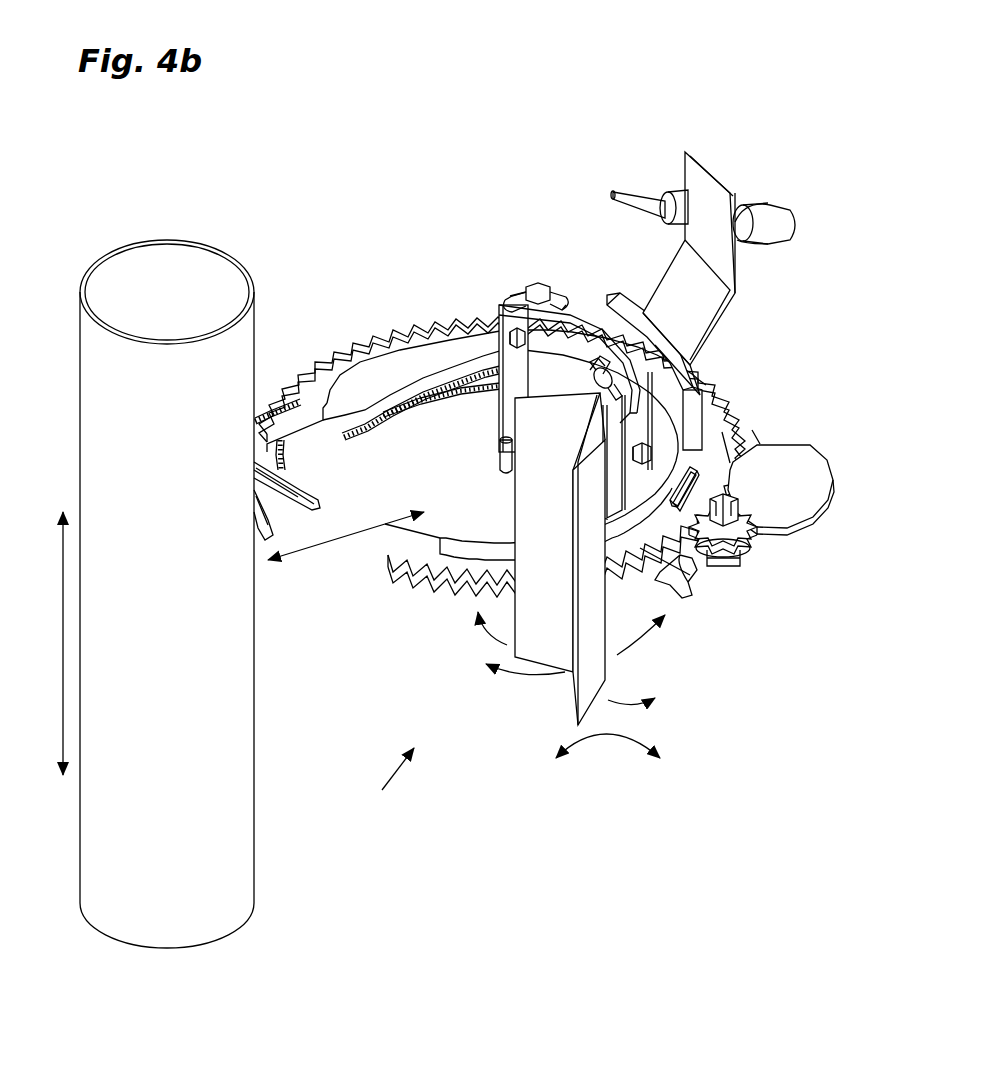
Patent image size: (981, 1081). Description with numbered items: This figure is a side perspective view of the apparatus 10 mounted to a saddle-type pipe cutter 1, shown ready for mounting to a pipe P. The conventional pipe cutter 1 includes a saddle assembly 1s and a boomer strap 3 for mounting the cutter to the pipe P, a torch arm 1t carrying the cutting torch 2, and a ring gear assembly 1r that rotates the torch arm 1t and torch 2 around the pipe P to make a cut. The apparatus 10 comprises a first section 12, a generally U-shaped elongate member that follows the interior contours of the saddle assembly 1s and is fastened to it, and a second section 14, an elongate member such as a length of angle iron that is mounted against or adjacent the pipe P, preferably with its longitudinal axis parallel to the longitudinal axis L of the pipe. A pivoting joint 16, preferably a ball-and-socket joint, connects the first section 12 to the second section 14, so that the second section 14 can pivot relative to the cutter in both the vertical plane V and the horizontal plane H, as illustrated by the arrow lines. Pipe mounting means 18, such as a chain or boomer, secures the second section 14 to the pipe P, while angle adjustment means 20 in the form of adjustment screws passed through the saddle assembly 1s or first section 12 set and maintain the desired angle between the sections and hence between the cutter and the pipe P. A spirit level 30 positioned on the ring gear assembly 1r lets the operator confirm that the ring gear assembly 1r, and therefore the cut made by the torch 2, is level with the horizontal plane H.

The saddle-type pipe cutter 1 is at (509, 243).
The ring gear assembly 1r is at (342, 341).
The saddle assembly 1s is at (585, 322).
The torch arm 1t is at (750, 284).
The cutting torch 2 is at (611, 181).
The boomer strap 3 is at (270, 390).
The apparatus 10 is at (390, 784).
The first section 12 is at (574, 357).
The second section 14 is at (556, 510).
The pivoting joint 16 is at (589, 380).
The pipe mounting means 18 is at (300, 456).
The angle adjustment means 20 is at (496, 458).
The spirit level 30 is at (703, 466).
The pipe P is at (169, 842).
The longitudinal axis of the pipe L is at (56, 649).
The vertical plane V is at (567, 657).
The horizontal plane H is at (608, 746).